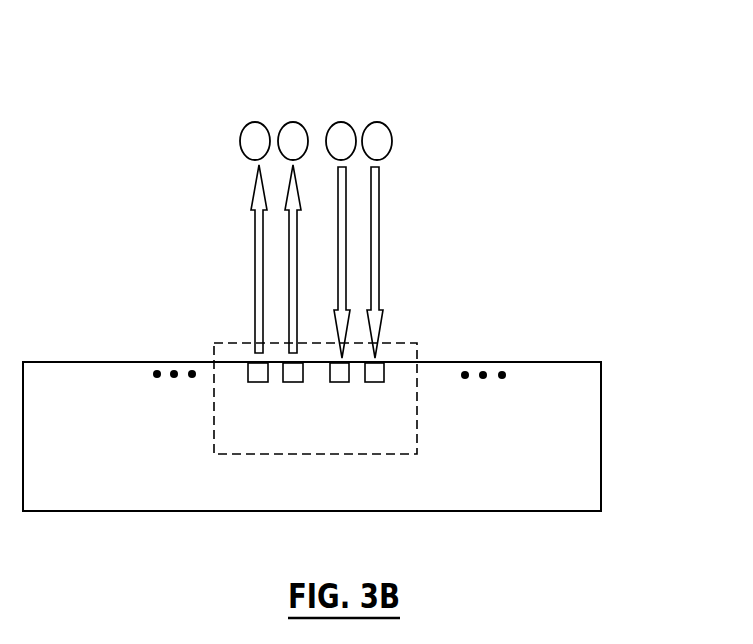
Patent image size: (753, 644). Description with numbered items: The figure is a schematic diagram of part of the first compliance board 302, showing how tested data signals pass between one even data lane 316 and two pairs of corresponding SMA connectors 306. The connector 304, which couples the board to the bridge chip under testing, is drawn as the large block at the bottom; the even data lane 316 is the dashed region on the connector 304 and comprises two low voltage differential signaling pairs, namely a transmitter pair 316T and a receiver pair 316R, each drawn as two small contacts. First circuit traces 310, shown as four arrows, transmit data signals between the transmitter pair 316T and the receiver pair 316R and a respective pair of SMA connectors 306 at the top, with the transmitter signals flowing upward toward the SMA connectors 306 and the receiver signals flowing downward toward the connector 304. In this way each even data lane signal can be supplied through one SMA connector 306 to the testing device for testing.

The first compliance board 302 is at (598, 90).
The connector 304 is at (506, 499).
The SMA connectors 306 is at (307, 122).
The first circuit traces 310 is at (397, 180).
The even data lane 316 is at (214, 343).
The transmitter pair 316T is at (241, 387).
The receiver pair 316R is at (324, 387).